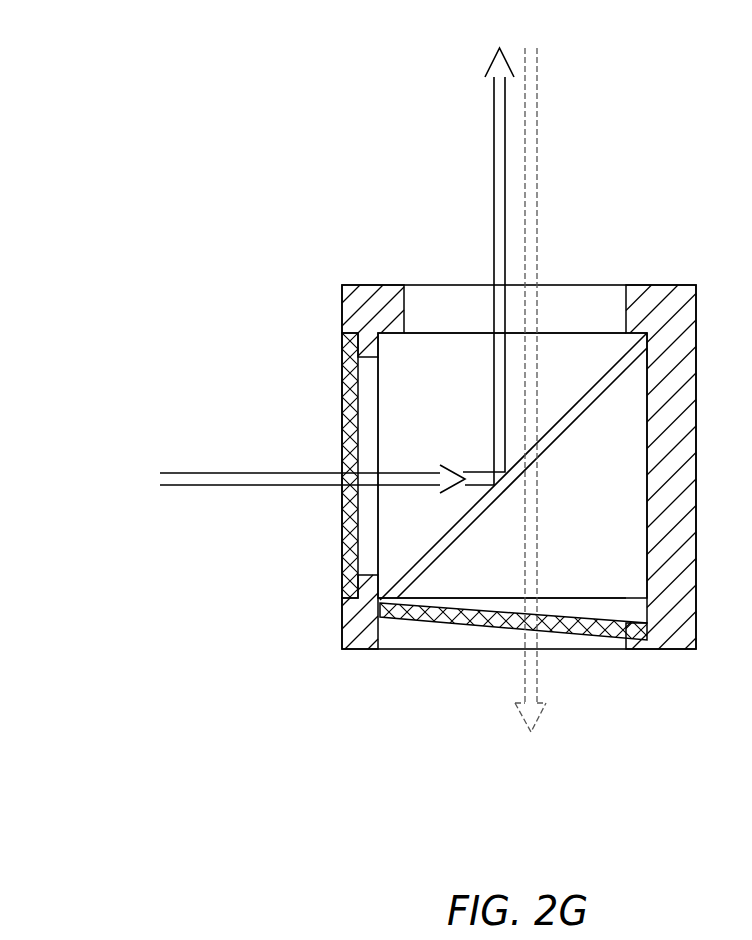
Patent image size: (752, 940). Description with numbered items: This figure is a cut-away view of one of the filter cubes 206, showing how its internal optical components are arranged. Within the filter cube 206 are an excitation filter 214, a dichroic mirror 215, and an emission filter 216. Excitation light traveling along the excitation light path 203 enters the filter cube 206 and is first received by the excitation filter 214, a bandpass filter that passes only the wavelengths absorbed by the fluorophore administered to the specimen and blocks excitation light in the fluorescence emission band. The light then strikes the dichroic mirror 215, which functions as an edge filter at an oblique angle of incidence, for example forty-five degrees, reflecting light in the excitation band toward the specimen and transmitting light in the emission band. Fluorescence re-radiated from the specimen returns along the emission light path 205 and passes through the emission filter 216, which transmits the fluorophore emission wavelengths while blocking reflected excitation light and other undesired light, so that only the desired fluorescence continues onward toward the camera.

The filter cube 206 is at (337, 117).
The excitation light path 203 is at (494, 196).
The emission light path 205 is at (525, 669).
The excitation filter 214 is at (343, 537).
The dichroic mirror 215 is at (579, 398).
The emission filter 216 is at (589, 637).